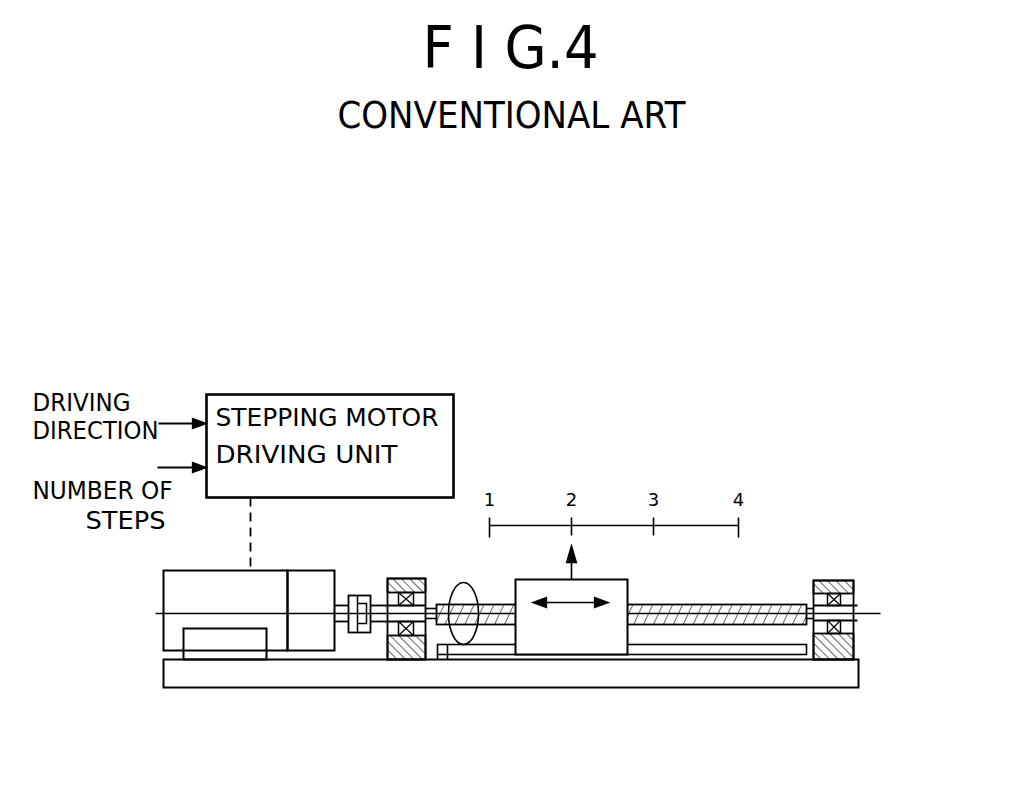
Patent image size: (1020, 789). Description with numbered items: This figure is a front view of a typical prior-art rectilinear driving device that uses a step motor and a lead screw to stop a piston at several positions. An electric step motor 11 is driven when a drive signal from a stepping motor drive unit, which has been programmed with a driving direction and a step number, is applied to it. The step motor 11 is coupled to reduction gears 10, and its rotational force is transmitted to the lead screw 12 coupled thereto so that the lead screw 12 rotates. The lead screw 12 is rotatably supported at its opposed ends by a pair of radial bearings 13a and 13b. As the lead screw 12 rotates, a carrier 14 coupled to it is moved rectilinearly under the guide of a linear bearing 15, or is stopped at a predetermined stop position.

The reduction gears 10 is at (304, 625).
The step motor 11 is at (225, 596).
The lead screw 12 is at (725, 602).
The radial bearing 13a is at (400, 580).
The radial bearing 13b is at (835, 597).
The carrier 14 is at (560, 637).
The linear bearing 15 is at (683, 650).